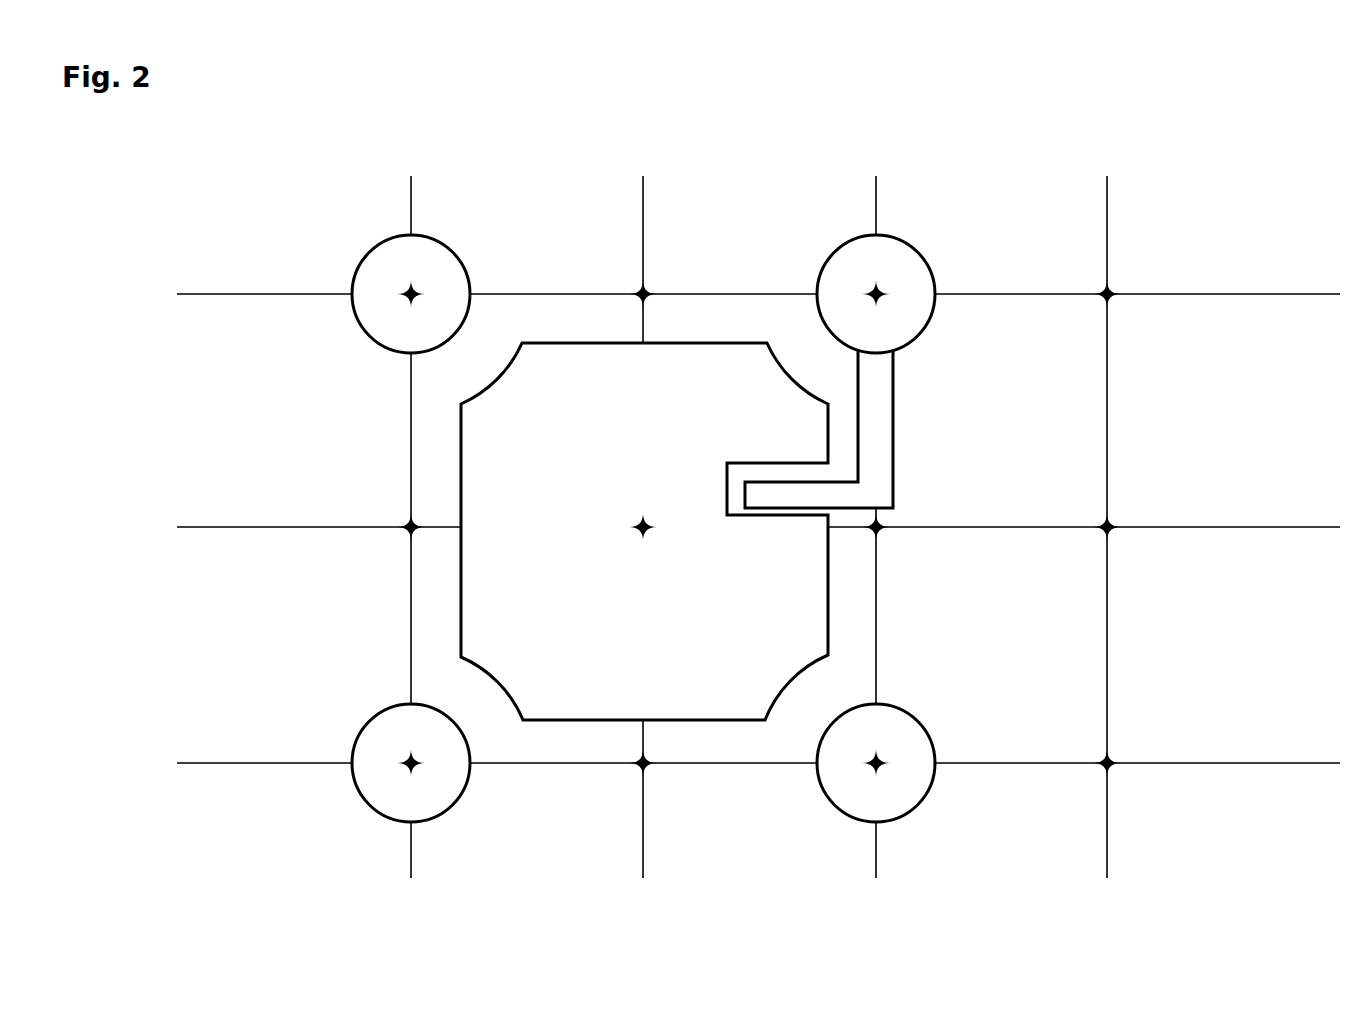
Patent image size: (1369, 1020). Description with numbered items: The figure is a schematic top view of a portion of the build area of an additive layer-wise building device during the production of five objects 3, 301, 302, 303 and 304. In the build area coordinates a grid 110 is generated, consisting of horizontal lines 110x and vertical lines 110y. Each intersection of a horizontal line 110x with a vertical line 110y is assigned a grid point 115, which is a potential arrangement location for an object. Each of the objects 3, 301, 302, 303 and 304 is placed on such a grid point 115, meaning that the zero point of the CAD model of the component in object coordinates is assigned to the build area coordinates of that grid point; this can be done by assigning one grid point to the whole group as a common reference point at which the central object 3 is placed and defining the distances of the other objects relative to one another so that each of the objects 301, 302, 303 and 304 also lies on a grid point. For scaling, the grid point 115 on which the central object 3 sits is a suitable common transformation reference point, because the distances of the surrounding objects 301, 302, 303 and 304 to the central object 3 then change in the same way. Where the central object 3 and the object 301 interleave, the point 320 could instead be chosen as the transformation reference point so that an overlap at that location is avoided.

The grid 110 is at (758, 505).
The horizontal line 110x is at (1183, 528).
The vertical line 110y is at (876, 207).
The grid point 115 is at (1107, 763).
The object 3 is at (480, 470).
The object 301 is at (892, 265).
The object 302 is at (882, 732).
The object 303 is at (380, 763).
The object 304 is at (408, 263).
The point 320 is at (786, 513).